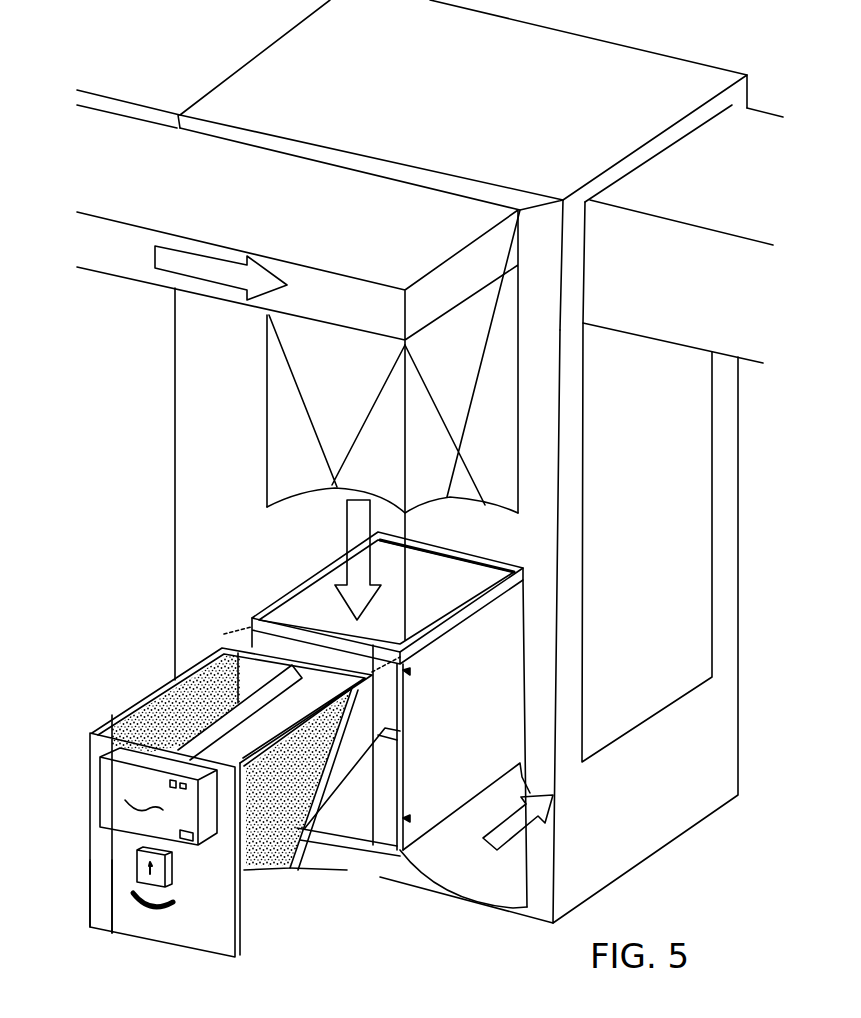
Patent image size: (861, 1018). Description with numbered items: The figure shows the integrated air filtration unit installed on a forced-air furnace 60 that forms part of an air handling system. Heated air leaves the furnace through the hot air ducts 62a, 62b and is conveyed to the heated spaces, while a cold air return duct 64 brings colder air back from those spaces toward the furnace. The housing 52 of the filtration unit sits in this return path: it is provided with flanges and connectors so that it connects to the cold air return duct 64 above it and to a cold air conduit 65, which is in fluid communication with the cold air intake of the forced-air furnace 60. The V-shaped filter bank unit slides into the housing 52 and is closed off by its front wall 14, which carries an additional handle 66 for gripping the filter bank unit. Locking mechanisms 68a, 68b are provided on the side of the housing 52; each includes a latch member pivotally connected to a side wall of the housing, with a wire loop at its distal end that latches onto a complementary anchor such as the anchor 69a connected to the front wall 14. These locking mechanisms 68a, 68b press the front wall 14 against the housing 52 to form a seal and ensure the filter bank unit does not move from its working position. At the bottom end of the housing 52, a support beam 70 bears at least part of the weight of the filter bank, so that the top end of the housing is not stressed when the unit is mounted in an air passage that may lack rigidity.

The front wall 14 is at (105, 880).
The housing 52 is at (500, 726).
The forced-air furnace 60 is at (687, 810).
The hot air duct 62a is at (182, 50).
The hot air duct 62b is at (762, 198).
The cold air return duct 64 is at (308, 231).
The cold air conduit 65 is at (470, 878).
The handle 66 is at (160, 905).
The locking mechanism 68a is at (408, 819).
The locking mechanism 68b is at (410, 672).
The anchor 69a is at (243, 927).
The support beam 70 is at (371, 794).